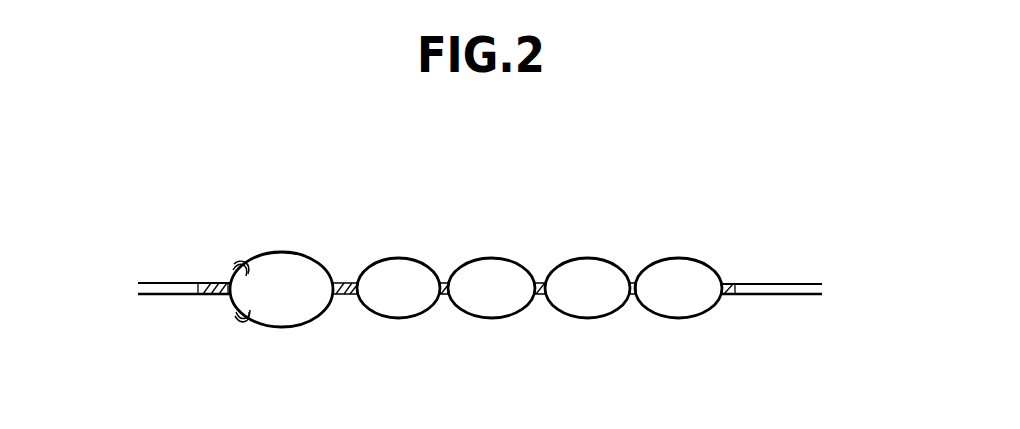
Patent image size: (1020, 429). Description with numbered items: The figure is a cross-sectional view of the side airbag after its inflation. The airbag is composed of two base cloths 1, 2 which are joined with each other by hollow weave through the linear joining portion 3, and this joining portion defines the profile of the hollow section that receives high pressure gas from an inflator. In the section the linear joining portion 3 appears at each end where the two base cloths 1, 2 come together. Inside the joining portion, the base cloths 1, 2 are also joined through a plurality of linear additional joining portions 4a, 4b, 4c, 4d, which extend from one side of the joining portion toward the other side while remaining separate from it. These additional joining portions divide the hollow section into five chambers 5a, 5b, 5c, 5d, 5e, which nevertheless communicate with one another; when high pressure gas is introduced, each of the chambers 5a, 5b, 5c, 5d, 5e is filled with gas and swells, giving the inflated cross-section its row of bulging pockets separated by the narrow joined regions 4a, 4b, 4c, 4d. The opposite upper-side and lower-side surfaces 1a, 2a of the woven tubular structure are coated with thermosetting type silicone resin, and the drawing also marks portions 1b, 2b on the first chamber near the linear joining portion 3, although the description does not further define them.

The base cloth 1 is at (788, 285).
The base cloth 2 is at (788, 295).
The linear joining portion 3 is at (725, 283).
The upper-side surface 1a is at (284, 252).
The lead connection of first electrode 1b is at (240, 270).
The lower-side surface 2a is at (320, 322).
The lead connection of second electrode 2b is at (240, 305).
The linear additional joining portion 4a is at (338, 283).
The linear additional joining portion 4b is at (445, 280).
The linear additional joining portion 4c is at (538, 278).
The linear additional joining portion 4d is at (630, 280).
The chamber 5a is at (278, 312).
The chamber 5b is at (402, 313).
The chamber 5c is at (497, 312).
The chamber 5d is at (592, 313).
The chamber 5e is at (682, 312).